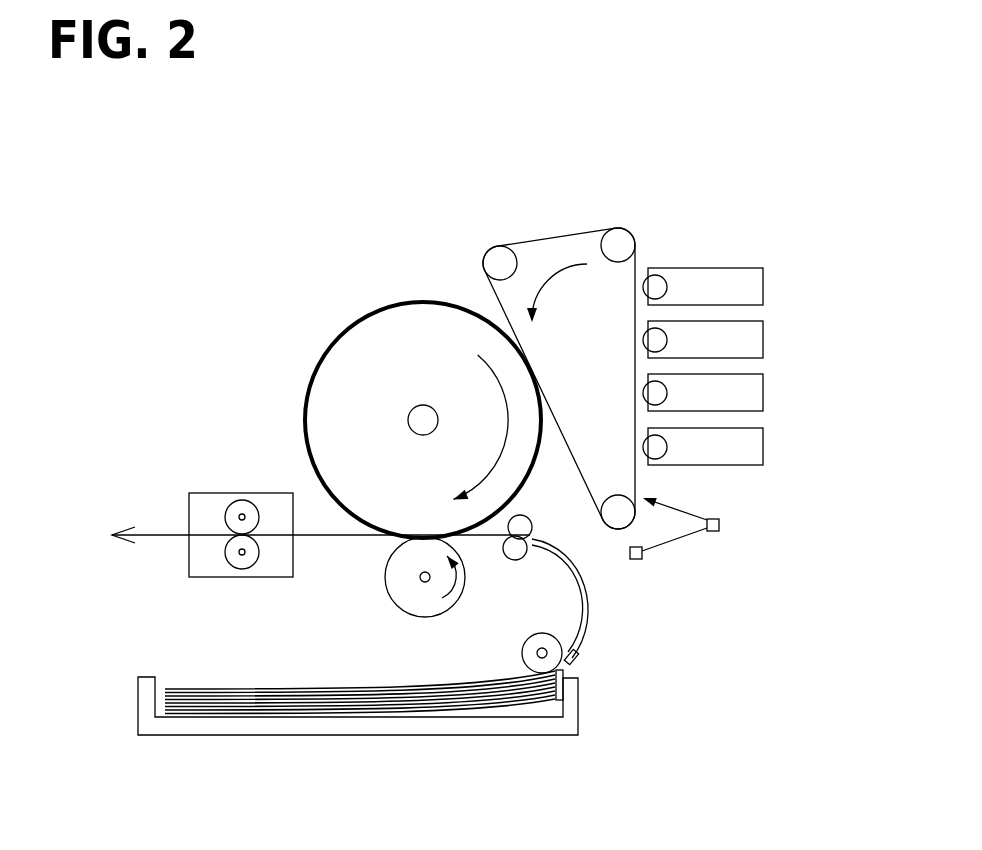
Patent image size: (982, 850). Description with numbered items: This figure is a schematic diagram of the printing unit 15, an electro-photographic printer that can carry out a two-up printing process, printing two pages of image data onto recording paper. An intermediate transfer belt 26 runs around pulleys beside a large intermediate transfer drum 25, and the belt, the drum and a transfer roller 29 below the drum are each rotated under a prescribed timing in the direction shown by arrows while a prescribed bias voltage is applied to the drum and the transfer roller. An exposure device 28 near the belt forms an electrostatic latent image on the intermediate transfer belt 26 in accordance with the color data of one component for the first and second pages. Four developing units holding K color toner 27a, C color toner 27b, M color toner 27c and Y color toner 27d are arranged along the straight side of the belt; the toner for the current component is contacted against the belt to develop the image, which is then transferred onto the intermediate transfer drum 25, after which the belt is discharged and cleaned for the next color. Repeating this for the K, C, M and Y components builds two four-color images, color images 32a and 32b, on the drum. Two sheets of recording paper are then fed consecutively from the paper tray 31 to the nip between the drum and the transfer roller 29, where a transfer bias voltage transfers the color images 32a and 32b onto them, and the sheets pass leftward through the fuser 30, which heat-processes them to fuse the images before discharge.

The printing unit 15 is at (215, 224).
The intermediate transfer drum 25 is at (437, 328).
The intermediate transfer belt 26 is at (547, 242).
The K color toner 27a is at (763, 287).
The C color toner 27b is at (763, 340).
The M color toner 27c is at (763, 393).
The Y color toner 27d is at (763, 447).
The exposure device 28 is at (718, 557).
The transfer roller 29 is at (393, 600).
The fuser 30 is at (240, 577).
The paper tray 31 is at (357, 735).
The color image 32a is at (527, 483).
The color image 32b is at (328, 345).